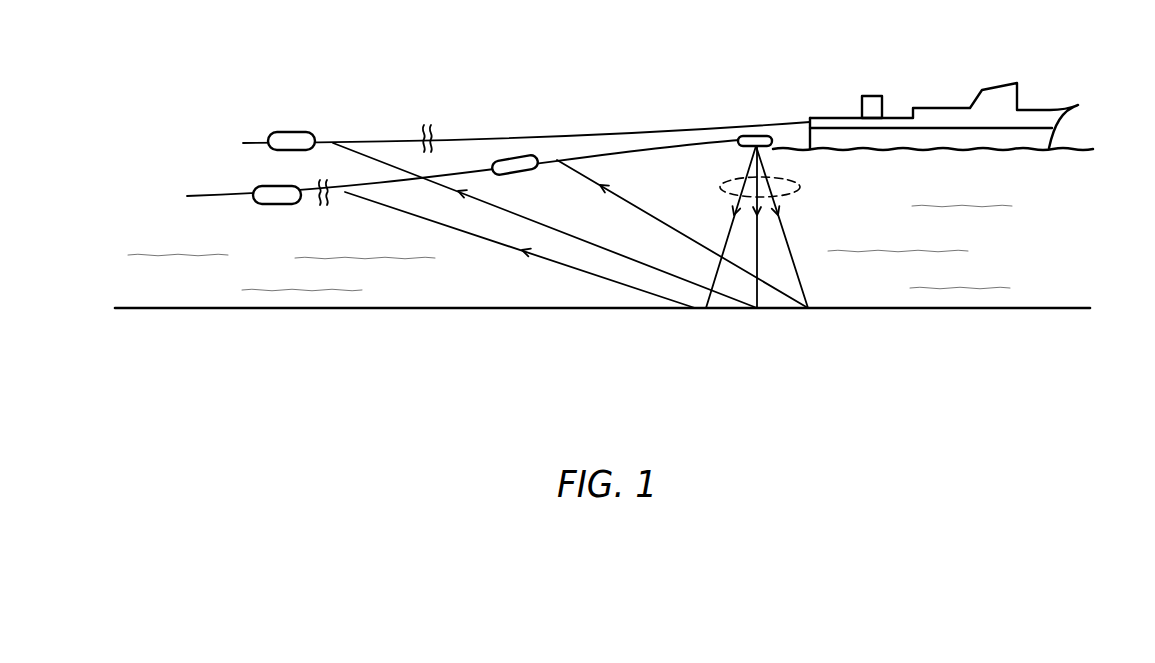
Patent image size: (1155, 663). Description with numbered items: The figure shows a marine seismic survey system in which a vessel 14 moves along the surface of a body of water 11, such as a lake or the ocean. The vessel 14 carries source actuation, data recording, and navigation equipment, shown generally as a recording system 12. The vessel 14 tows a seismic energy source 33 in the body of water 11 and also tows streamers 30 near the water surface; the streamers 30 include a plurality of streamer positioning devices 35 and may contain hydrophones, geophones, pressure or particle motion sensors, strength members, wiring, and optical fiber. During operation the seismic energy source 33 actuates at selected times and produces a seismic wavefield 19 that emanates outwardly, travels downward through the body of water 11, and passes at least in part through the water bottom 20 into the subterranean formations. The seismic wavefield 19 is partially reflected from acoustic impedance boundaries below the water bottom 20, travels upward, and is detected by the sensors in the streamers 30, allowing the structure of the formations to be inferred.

The body of water 11 is at (1040, 176).
The recording system 12 is at (870, 95).
The vessel 14 is at (1046, 106).
The seismic wavefield 19 is at (800, 188).
The water bottom 20 is at (206, 310).
The streamer 30 is at (248, 141).
The seismic energy source 33 is at (753, 134).
The streamer positioning device 35 is at (273, 205).